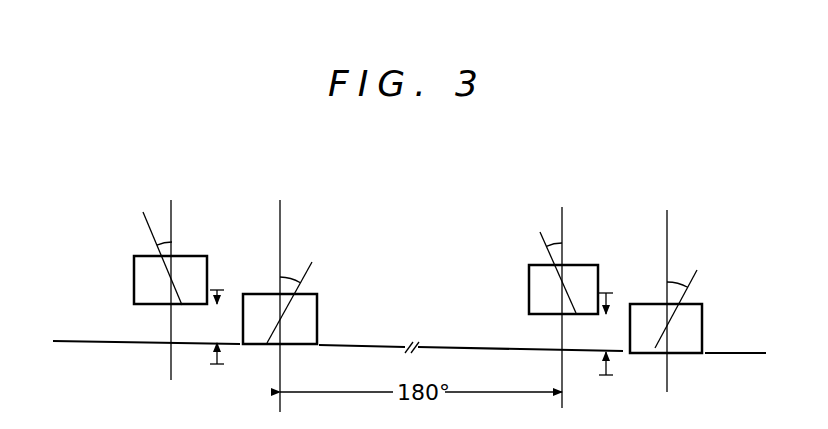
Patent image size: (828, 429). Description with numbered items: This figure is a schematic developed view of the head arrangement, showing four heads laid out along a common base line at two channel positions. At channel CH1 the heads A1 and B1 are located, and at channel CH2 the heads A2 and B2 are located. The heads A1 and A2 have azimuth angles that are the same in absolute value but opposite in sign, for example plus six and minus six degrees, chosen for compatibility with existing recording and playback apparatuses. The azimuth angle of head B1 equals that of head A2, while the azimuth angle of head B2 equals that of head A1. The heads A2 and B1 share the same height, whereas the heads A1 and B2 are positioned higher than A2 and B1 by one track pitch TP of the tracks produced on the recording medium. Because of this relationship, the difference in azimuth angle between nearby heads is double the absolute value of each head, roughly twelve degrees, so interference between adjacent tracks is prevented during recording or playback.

The channel CH2 head position CH2 is at (225, 274).
The channel CH1 head position CH1 is at (614, 277).
The head A1 is at (585, 263).
The head A2 is at (254, 293).
The head B1 is at (642, 303).
The head B2 is at (190, 256).
The track pitch TP is at (407, 332).